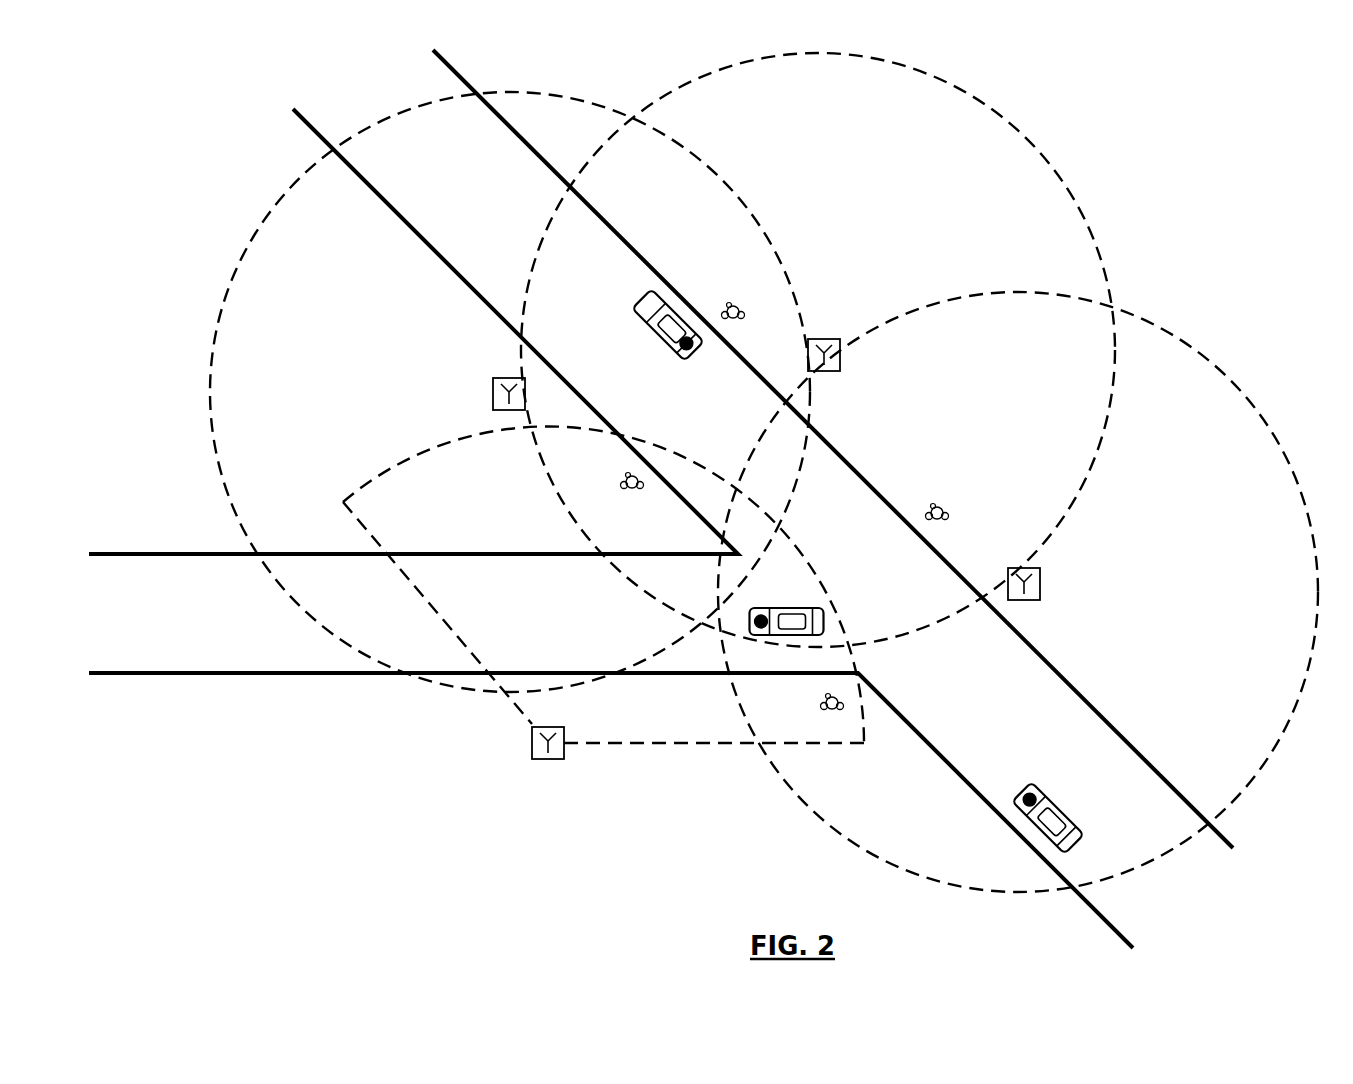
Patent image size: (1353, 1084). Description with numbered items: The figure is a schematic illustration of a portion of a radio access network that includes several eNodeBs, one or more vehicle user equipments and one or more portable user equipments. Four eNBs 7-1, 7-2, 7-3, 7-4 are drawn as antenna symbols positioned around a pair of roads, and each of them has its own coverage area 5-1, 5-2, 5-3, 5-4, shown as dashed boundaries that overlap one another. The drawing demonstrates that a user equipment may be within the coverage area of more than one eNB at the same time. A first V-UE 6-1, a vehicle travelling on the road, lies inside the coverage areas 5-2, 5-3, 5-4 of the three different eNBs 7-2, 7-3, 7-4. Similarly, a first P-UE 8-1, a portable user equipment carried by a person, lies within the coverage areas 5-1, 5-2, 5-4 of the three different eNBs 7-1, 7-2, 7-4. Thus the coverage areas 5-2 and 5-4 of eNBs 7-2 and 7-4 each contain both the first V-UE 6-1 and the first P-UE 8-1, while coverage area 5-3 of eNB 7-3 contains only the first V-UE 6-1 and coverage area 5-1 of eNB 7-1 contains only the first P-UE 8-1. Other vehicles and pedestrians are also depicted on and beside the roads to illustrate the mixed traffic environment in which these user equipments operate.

The coverage area 5-1 is at (296, 190).
The coverage area 5-2 is at (698, 83).
The coverage area 5-3 is at (1254, 777).
The coverage area 5-4 is at (688, 745).
The first V-UE 6-1 is at (758, 607).
The eNB 7-1 is at (492, 393).
The eNB 7-2 is at (838, 339).
The eNB 7-3 is at (1030, 601).
The eNB 7-4 is at (548, 760).
The first P-UE 8-1 is at (627, 495).